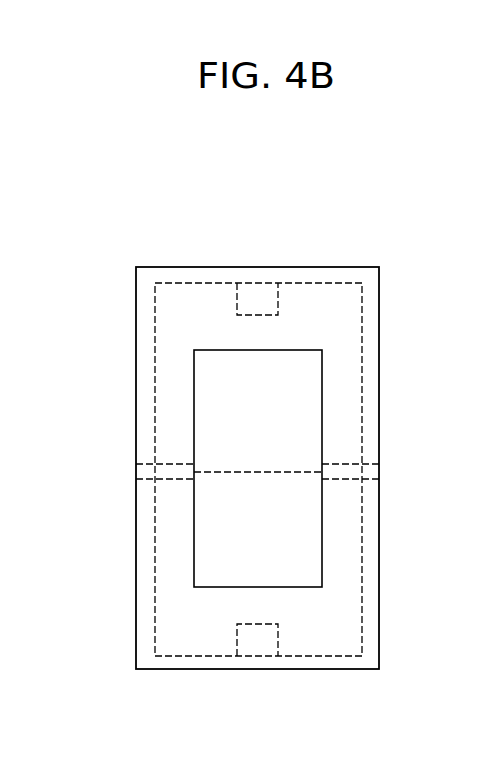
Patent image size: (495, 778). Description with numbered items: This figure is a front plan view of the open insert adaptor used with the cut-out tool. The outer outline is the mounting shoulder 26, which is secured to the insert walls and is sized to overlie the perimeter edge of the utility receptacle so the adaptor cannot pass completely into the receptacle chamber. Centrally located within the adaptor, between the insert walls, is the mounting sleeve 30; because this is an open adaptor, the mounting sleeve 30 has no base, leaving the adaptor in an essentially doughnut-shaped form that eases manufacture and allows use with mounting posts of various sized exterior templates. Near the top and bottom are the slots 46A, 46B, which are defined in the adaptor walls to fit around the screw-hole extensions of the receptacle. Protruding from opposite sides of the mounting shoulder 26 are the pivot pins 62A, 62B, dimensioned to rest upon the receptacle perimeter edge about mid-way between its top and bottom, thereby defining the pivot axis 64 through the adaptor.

The mounting shoulder 26 is at (381, 283).
The mounting sleeve 30 is at (256, 442).
The slot 46A is at (250, 298).
The slot 46B is at (250, 646).
The pivot pin 62A is at (143, 472).
The pivot pin 62B is at (380, 472).
The pivot axis 64 is at (265, 478).